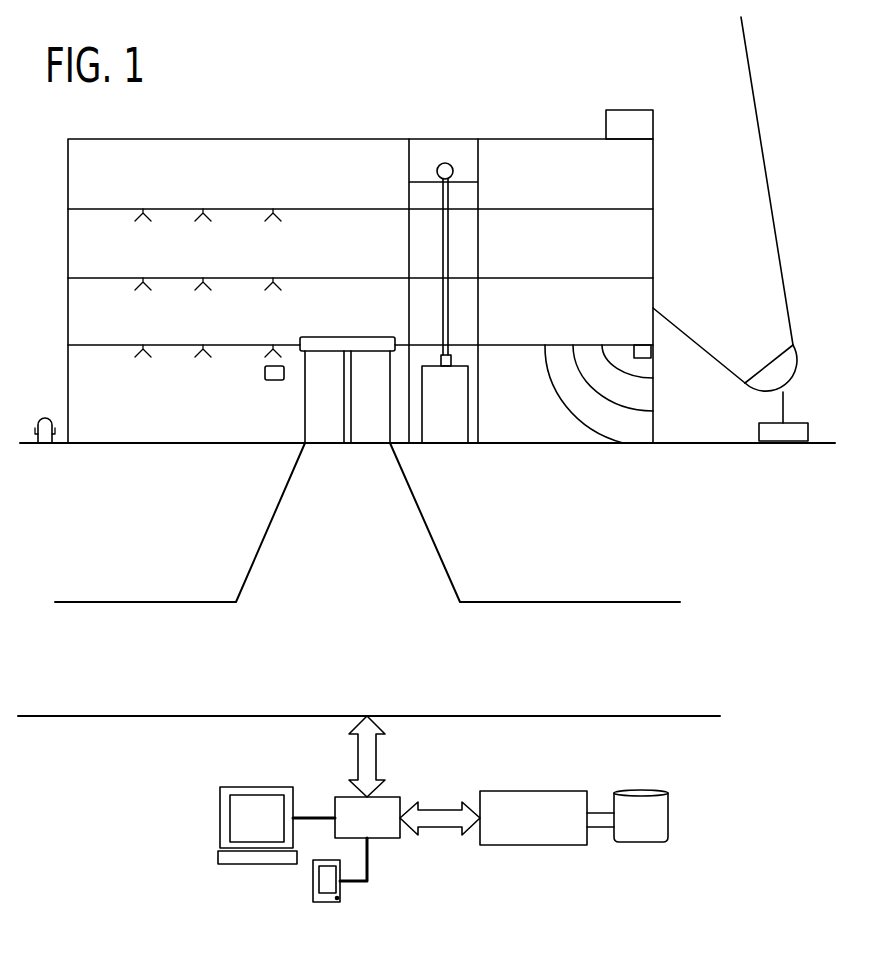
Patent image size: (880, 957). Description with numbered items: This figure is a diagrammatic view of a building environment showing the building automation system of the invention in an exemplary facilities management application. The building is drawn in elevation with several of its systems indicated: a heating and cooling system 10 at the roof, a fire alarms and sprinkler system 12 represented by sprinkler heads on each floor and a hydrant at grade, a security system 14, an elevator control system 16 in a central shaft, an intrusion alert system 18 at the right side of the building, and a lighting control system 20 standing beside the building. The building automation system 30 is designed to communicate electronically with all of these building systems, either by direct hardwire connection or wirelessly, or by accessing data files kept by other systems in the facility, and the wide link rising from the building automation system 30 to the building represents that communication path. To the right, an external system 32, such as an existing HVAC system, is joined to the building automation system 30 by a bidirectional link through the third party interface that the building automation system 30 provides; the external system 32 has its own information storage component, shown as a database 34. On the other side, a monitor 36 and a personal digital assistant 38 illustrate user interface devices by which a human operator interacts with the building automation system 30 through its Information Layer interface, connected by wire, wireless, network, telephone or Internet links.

The heating and cooling system 10 is at (628, 110).
The fire alarms and sprinkler system 12 is at (45, 417).
The security system 14 is at (265, 375).
The elevator control system 16 is at (433, 139).
The intrusion alert system 18 is at (653, 350).
The lighting control system 20 is at (780, 444).
The building automation system 30 is at (393, 797).
The external system 32 is at (533, 791).
The database 34 is at (642, 842).
The monitor 36 is at (257, 787).
The personal digital assistant (PDA) 38 is at (313, 882).